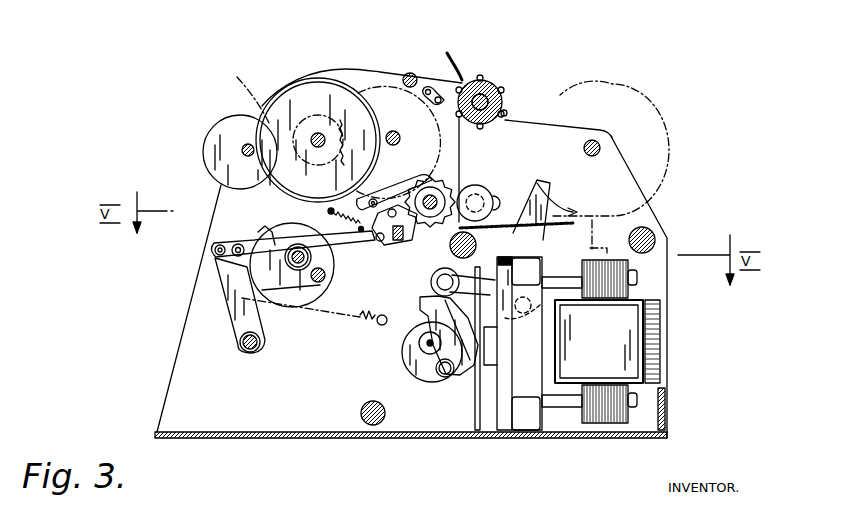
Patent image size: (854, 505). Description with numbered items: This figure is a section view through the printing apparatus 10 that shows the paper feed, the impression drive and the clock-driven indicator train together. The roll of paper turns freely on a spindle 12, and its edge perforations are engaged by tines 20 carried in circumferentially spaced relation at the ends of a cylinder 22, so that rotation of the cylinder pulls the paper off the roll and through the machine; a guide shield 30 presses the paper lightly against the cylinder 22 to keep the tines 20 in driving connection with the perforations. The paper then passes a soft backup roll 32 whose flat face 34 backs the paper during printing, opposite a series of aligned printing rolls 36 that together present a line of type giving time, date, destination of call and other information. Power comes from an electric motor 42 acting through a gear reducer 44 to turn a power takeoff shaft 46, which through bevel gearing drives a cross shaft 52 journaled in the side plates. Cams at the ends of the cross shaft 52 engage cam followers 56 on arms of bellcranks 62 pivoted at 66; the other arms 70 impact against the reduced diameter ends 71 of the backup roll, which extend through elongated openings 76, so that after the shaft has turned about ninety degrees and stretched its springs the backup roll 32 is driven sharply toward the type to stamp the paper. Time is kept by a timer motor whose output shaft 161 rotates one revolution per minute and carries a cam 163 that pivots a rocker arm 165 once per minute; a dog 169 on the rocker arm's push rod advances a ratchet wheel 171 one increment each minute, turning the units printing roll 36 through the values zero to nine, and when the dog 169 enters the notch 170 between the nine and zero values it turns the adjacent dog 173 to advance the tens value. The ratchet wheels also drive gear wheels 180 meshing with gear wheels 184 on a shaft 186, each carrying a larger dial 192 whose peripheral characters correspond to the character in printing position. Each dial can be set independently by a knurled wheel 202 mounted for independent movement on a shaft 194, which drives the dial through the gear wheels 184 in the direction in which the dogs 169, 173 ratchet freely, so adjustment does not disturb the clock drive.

The machine housing 10 is at (637, 90).
The spindle 12 is at (600, 147).
The tines 20 is at (502, 84).
The cylinder 22 is at (508, 114).
The guide shield 30 is at (460, 57).
The soft backup roll 32 is at (493, 193).
The flat face 34 is at (432, 180).
The printing rolls 36 is at (441, 273).
The electric motor 42 is at (633, 327).
The gear reducer 44 is at (533, 349).
The power takeoff shaft 46 is at (483, 345).
The cross shaft 52 is at (405, 347).
The cam followers 56 is at (442, 280).
The bellcranks 62 is at (482, 285).
The pivot 66 is at (545, 275).
The arms 70 is at (553, 193).
The reduced diameter ends 71 is at (472, 185).
The elongated openings 76 is at (532, 177).
The output shaft 161 is at (330, 262).
The cam 163 is at (318, 290).
The rocker arm 165 is at (228, 317).
The dog 169 is at (390, 240).
The notch 170 is at (430, 236).
The ratchet wheel 171 is at (394, 178).
The adjacent dog 173 is at (400, 186).
The gear wheels 180 is at (387, 90).
The gear wheels 184 is at (297, 117).
The shaft 186 is at (318, 133).
The dial 192 is at (340, 85).
The shaft 194 is at (243, 152).
The wheel 202 is at (210, 128).